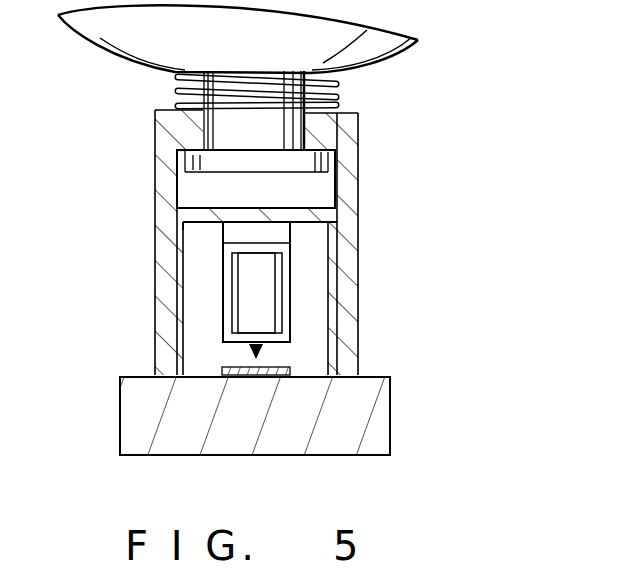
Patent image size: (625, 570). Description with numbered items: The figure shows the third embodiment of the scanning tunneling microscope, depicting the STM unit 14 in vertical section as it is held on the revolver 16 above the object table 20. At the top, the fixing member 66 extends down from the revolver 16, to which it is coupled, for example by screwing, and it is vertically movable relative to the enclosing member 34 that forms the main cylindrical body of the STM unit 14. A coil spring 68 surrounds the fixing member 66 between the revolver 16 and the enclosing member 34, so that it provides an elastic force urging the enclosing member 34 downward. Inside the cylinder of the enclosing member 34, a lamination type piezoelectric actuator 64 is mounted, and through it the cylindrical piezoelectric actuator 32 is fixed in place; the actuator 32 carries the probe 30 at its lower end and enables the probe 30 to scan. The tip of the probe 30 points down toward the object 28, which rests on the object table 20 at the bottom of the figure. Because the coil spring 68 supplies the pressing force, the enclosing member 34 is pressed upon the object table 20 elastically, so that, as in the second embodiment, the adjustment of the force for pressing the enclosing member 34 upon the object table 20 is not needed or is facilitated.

The STM unit 14 is at (364, 156).
The revolver 16 is at (90, 45).
The object table 20 is at (396, 393).
The object 28 is at (227, 366).
The probe 30 is at (257, 362).
The cylindrical piezoelectric actuator 32 is at (292, 292).
The enclosing member 34 is at (340, 218).
The lamination type piezoelectric actuator 64 is at (228, 235).
The fixing member 66 is at (308, 117).
The coil spring 68 is at (175, 86).